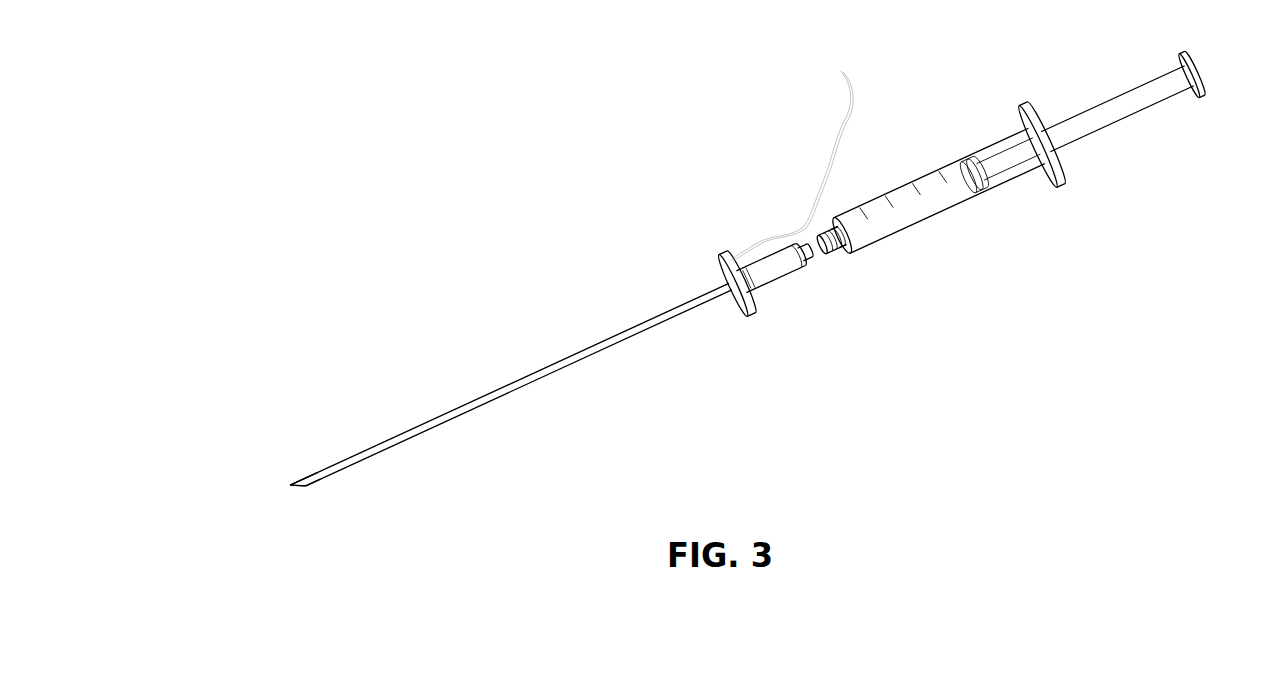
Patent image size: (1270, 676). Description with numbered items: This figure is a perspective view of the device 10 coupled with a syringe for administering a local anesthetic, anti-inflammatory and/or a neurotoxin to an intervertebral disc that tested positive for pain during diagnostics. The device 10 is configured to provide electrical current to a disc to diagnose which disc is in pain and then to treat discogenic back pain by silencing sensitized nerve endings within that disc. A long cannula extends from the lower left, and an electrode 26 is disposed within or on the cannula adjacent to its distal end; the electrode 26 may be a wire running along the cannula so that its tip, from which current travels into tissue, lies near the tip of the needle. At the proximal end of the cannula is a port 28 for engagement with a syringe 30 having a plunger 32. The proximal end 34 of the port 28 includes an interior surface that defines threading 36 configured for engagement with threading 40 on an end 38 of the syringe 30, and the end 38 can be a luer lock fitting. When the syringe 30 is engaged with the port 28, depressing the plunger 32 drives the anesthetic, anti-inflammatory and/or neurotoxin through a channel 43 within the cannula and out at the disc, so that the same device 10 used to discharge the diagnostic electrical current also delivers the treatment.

The device 10 is at (702, 294).
The electrode 26 is at (840, 128).
The port 28 is at (771, 282).
The syringe 30 is at (924, 175).
The plunger 32 is at (1090, 105).
The proximal end of the port 34 is at (801, 272).
The threading 36 is at (807, 259).
The end of the syringe 38 is at (823, 255).
The threading 40 is at (830, 228).
The channel 43 is at (287, 485).